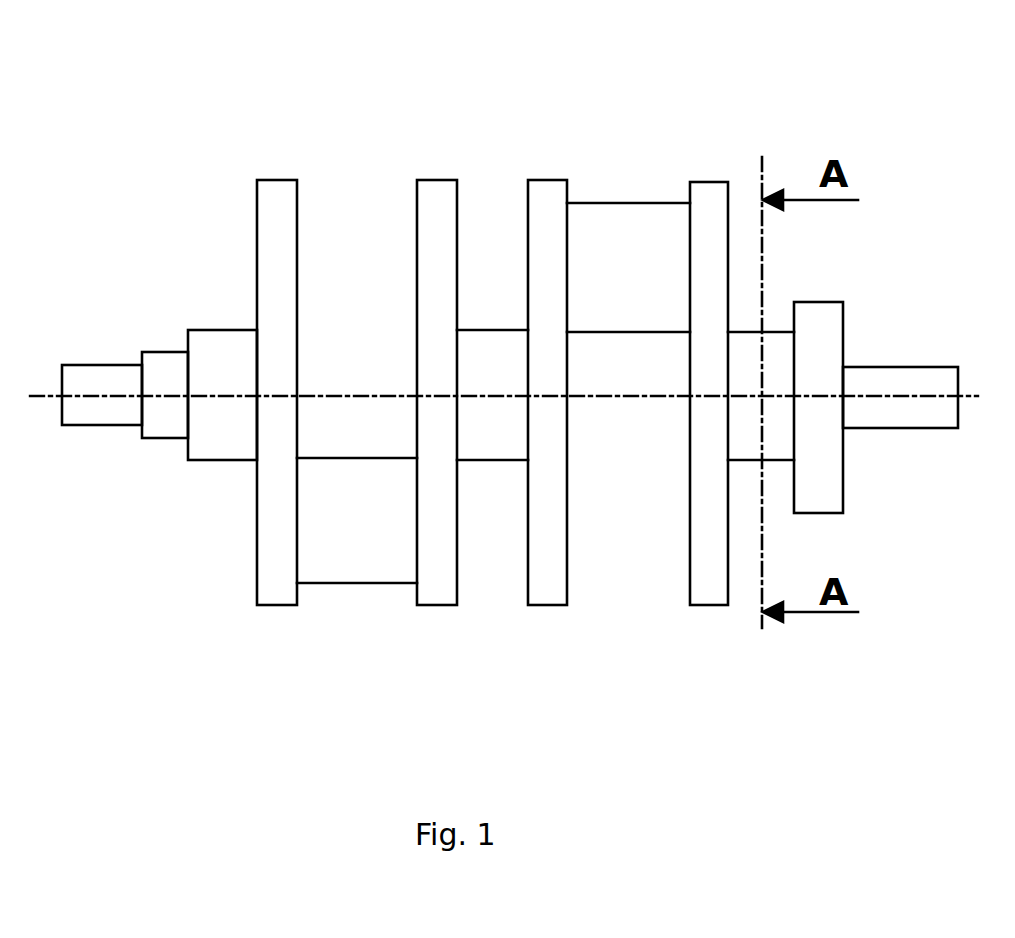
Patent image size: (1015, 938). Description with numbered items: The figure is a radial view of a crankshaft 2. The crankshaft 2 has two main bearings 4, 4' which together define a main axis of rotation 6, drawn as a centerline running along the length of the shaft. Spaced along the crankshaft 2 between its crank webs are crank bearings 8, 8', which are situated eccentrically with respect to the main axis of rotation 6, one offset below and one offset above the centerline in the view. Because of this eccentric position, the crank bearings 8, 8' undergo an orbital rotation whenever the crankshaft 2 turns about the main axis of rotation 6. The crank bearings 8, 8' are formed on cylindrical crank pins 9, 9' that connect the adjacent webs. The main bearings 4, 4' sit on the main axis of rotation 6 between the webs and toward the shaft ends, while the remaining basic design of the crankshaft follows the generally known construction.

The crankshaft 2 is at (840, 108).
The main bearing 4 is at (492, 355).
The main bearing 4' is at (843, 376).
The main axis of rotation 6 is at (40, 405).
The crank bearing 8 is at (357, 564).
The crank bearing 8' is at (628, 227).
The crank pin 9 is at (357, 460).
The crank pin 9' is at (628, 332).